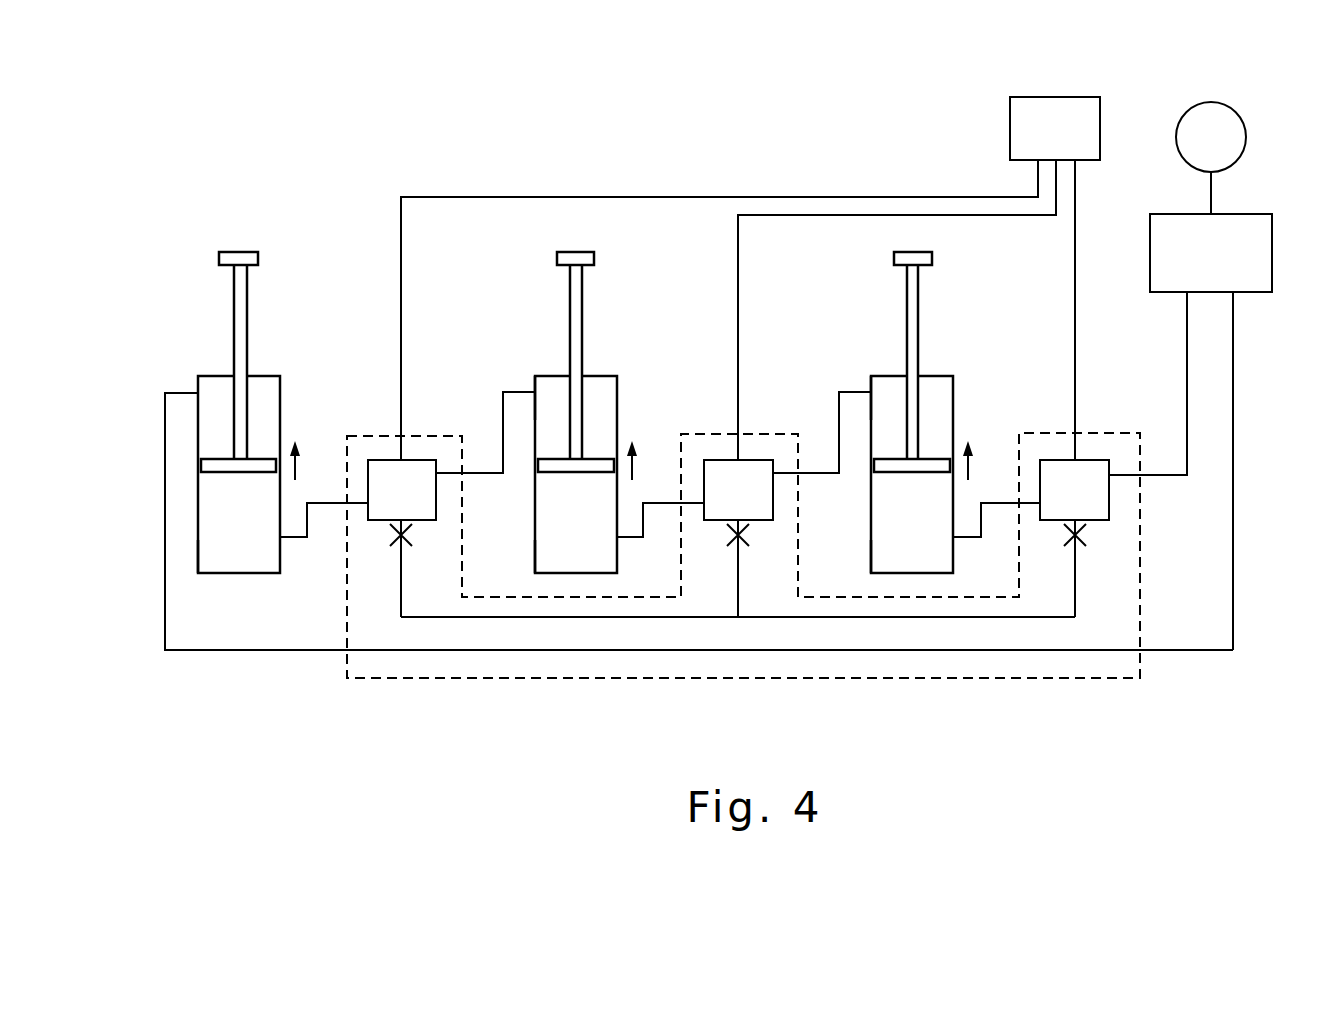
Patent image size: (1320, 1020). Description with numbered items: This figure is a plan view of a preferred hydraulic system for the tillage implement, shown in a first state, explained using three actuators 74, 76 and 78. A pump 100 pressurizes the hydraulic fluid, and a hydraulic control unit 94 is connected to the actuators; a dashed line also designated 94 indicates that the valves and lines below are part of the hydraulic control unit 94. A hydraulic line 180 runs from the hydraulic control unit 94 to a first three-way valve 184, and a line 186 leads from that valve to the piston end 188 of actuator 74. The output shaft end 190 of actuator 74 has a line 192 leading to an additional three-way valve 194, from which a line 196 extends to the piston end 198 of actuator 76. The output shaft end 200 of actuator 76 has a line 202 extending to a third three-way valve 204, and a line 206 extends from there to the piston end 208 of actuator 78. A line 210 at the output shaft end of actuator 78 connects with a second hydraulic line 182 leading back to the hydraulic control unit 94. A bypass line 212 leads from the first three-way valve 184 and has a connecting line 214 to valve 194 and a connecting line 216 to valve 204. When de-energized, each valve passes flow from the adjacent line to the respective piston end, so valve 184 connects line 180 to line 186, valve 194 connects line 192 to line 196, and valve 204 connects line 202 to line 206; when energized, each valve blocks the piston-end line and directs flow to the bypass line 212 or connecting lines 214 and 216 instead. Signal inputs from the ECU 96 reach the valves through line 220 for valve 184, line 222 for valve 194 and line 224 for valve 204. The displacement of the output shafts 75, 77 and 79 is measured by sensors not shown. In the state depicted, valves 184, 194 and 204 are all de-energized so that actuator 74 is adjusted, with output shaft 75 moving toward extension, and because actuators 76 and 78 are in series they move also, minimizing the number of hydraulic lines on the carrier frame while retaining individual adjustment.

The actuator 74 is at (963, 365).
The output shaft 75 is at (907, 298).
The actuator 76 is at (627, 368).
The output shaft 77 is at (570, 290).
The actuator 78 is at (290, 368).
The output shaft 79 is at (234, 307).
The hydraulic control unit 94 is at (1140, 678).
The ECU 96 is at (1010, 122).
The pump 100 is at (1238, 108).
The hydraulic line 180 is at (1187, 360).
The second hydraulic line 182 is at (1233, 355).
The first three-way valve 184 is at (1074, 503).
The line 186 is at (982, 527).
The piston end 188 is at (871, 548).
The output shaft end 190 is at (871, 380).
The line 192 is at (839, 407).
The three-way valve 194 is at (738, 503).
The line 196 is at (645, 528).
The piston end 198 is at (535, 550).
The output shaft end 200 is at (535, 380).
The line 202 is at (503, 412).
The third three-way valve 204 is at (402, 503).
The line 206 is at (307, 529).
The piston end 208 is at (198, 557).
The line 210 is at (165, 422).
The bypass line 212 is at (1075, 584).
The connecting line 214 is at (738, 558).
The connecting line 216 is at (401, 588).
The line 220 is at (1075, 262).
The line 222 is at (738, 250).
The line 224 is at (401, 245).